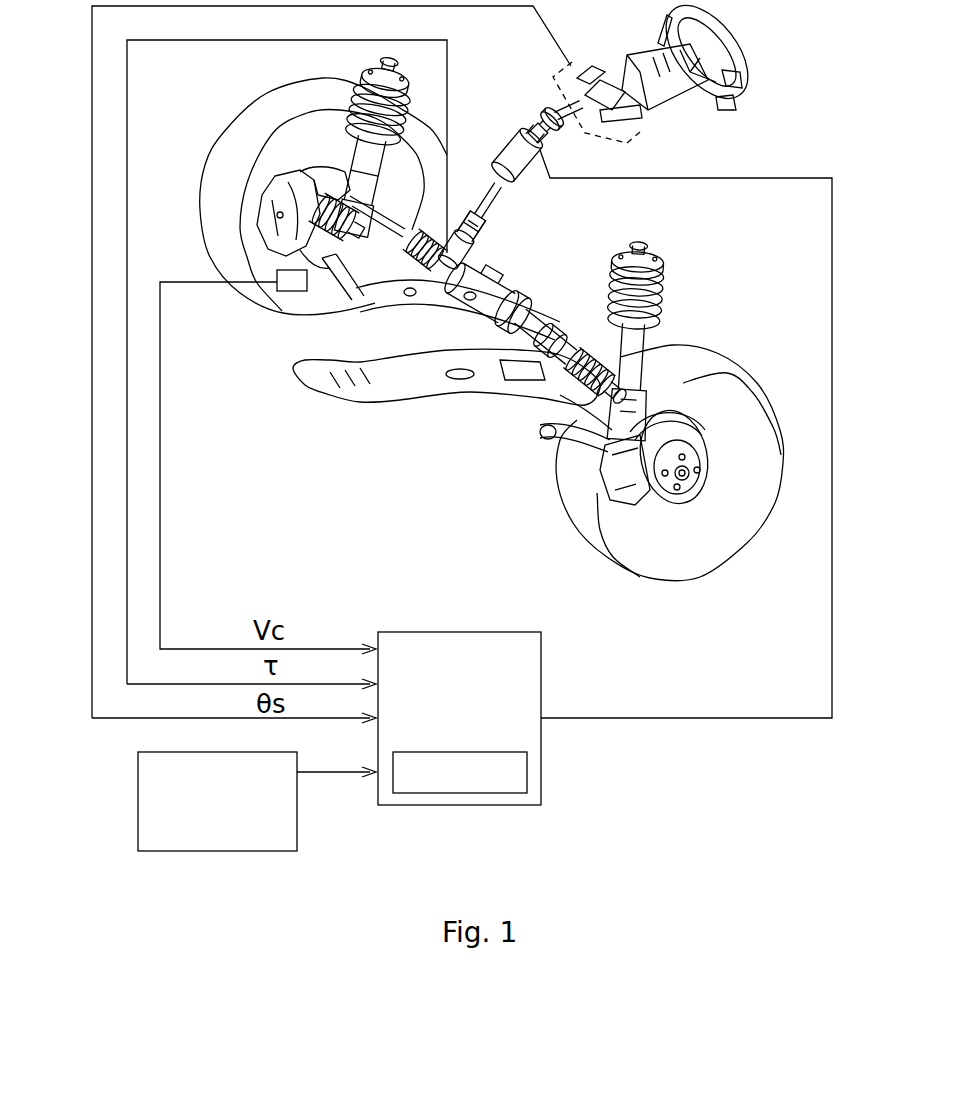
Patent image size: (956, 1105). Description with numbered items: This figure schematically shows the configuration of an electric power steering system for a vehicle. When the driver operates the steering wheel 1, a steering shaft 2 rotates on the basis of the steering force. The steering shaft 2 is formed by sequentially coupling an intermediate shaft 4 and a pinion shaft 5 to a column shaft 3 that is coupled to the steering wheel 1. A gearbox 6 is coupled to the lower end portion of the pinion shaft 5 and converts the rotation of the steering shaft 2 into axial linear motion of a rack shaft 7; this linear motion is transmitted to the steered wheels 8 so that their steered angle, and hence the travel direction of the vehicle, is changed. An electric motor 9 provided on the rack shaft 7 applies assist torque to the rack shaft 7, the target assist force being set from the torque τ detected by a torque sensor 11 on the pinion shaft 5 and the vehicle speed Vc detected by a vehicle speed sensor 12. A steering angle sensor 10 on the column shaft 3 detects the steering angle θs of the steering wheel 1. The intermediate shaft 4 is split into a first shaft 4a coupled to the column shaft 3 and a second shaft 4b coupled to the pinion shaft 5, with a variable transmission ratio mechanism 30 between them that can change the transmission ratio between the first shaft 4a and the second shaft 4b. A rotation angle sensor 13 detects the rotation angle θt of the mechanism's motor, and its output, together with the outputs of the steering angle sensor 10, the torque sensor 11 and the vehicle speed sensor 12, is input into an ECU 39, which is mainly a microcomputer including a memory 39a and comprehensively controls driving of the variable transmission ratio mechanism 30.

The steering wheel 1 is at (727, 24).
The steering shaft 2 is at (478, 168).
The column shaft 3 is at (554, 104).
The intermediate shaft 4 is at (550, 169).
The first shaft 4a is at (536, 160).
The second shaft 4b is at (500, 187).
The pinion shaft 5 is at (478, 220).
The gearbox 6 is at (470, 262).
The rack shaft 7 is at (539, 313).
The steered wheels 8 is at (270, 99).
The electric motor 9 is at (508, 288).
The steering angle sensor 10 is at (647, 102).
The torque sensor 11 is at (445, 232).
The vehicle speed sensor 12 is at (292, 291).
The rotation angle sensor 13 is at (138, 772).
The variable transmission ratio mechanism 30 is at (512, 130).
The ECU 39 is at (478, 806).
The memory 39a is at (467, 753).